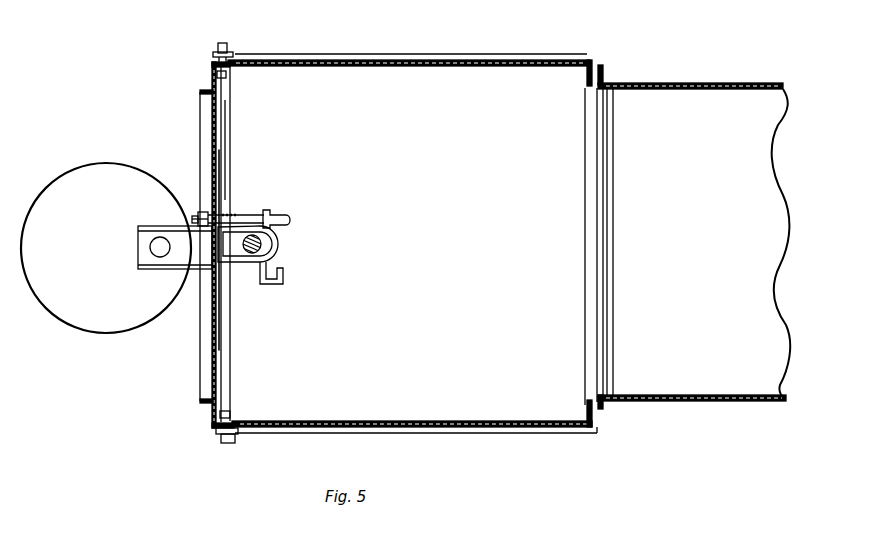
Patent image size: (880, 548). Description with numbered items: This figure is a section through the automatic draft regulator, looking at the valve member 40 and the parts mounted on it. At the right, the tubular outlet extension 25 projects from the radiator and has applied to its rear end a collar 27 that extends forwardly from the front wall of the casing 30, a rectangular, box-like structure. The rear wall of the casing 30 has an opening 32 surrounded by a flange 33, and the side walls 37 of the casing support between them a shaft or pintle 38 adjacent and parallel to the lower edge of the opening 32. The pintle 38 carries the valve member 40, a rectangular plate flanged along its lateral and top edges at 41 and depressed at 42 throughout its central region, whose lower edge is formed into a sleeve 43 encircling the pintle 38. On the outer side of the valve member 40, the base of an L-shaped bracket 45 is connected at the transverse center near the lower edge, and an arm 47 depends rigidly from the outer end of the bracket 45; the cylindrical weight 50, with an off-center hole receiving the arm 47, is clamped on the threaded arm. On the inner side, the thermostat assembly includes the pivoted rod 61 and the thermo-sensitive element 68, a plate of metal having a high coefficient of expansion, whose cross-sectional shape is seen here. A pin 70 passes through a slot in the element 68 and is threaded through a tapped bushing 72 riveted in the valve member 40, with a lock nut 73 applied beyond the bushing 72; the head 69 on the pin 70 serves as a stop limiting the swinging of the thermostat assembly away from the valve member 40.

The tubular outlet extension 25 is at (694, 240).
The collar 27 is at (696, 404).
The casing 30 is at (541, 402).
The opening 32 is at (200, 131).
The flange 33 is at (201, 92).
The side walls 37 is at (494, 58).
The shaft or pintle 38 is at (229, 444).
The valve member 40 is at (226, 371).
The flange 41 is at (226, 76).
The depressed region 42 is at (214, 332).
The sleeve 43 is at (226, 140).
The L-shaped bracket 45 is at (173, 263).
The arm 47 is at (155, 248).
The weight 50 is at (48, 238).
The rod 61 is at (262, 243).
The thermo-sensitive element 68 is at (280, 259).
The abutment or head 69 is at (291, 219).
The pin 70 is at (243, 226).
The bushing 72 is at (203, 212).
The lock nut 73 is at (199, 216).